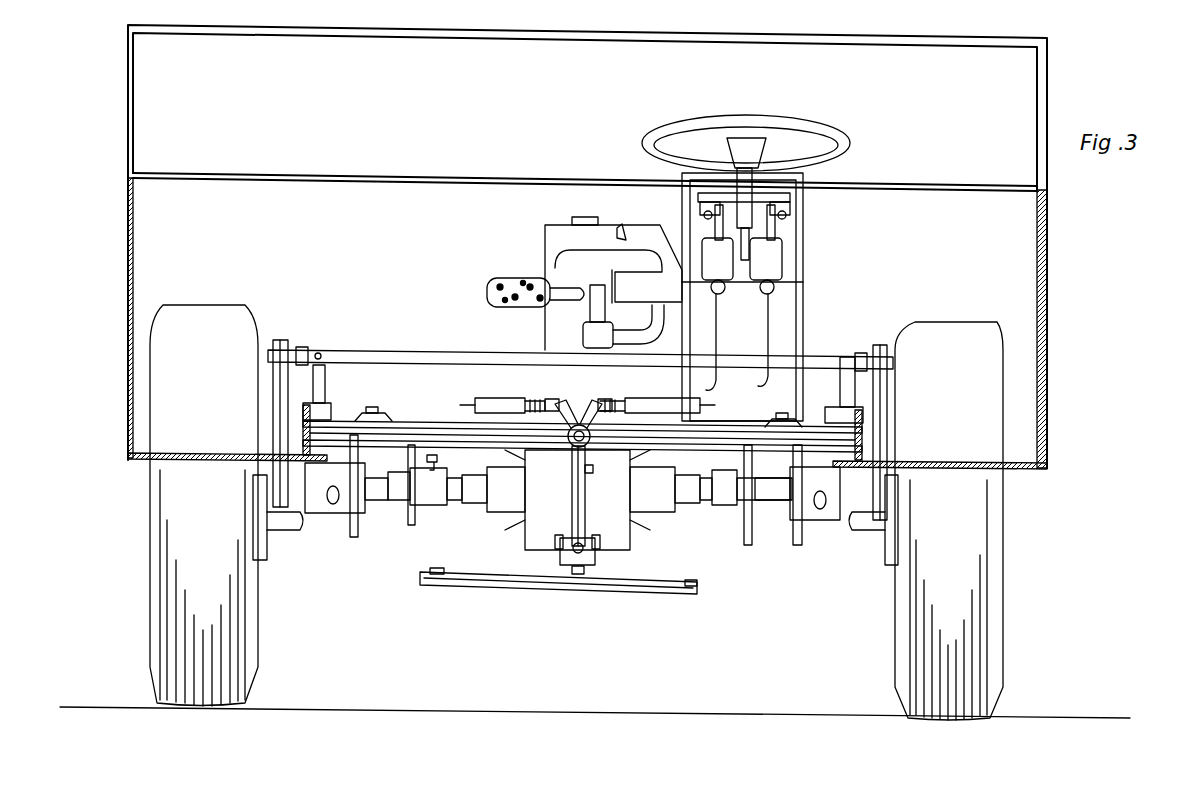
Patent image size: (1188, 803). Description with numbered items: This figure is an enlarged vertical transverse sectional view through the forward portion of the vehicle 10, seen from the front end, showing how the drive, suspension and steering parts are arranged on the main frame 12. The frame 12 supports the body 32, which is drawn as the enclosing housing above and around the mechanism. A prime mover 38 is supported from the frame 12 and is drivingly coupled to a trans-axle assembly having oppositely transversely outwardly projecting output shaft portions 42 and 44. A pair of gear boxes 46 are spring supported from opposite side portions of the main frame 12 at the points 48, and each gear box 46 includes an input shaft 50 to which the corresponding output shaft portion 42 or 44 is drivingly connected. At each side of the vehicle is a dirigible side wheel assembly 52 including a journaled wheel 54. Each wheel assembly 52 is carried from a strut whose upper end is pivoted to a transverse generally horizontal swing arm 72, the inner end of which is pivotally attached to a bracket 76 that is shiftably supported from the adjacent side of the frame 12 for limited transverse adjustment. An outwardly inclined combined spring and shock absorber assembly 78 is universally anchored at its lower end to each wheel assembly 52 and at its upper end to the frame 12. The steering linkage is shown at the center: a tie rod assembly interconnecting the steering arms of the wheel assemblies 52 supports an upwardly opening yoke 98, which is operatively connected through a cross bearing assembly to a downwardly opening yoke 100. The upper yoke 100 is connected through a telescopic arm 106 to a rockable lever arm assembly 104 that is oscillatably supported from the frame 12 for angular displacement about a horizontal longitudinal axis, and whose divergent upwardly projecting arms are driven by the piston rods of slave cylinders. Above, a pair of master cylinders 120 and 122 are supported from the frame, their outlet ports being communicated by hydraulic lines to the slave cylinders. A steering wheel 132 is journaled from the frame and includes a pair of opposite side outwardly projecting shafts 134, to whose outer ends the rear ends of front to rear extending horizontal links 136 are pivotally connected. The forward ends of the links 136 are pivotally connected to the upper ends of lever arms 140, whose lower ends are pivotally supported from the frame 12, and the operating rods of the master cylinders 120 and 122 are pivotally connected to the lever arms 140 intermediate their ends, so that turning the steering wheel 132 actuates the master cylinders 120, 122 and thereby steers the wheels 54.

The vehicle 10 is at (1044, 283).
The main frame 12 is at (864, 436).
The body 32 is at (1040, 340).
The prime mover 38 is at (568, 265).
The output shaft portion 42 is at (706, 495).
The output shaft portion 44 is at (455, 500).
The gear box 46 is at (328, 515).
The spring support 48 is at (392, 423).
The input shaft 50 is at (768, 500).
The dirigible side wheel assembly 52 is at (278, 552).
The wheel 54 is at (150, 612).
The swing arm 72 is at (406, 360).
The bracket 76 is at (333, 411).
The combined spring and shock absorber assembly 78 is at (278, 404).
The yoke 98 is at (598, 582).
The yoke 100 is at (600, 535).
The rockable lever arm assembly 104 is at (585, 410).
The telescopic arm 106 is at (572, 482).
The master cylinder 120 is at (784, 257).
The master cylinder 122 is at (705, 250).
The steering wheel 132 is at (800, 122).
The shaft 134 is at (765, 196).
The link 136 is at (790, 214).
The lever arm 140 is at (690, 225).